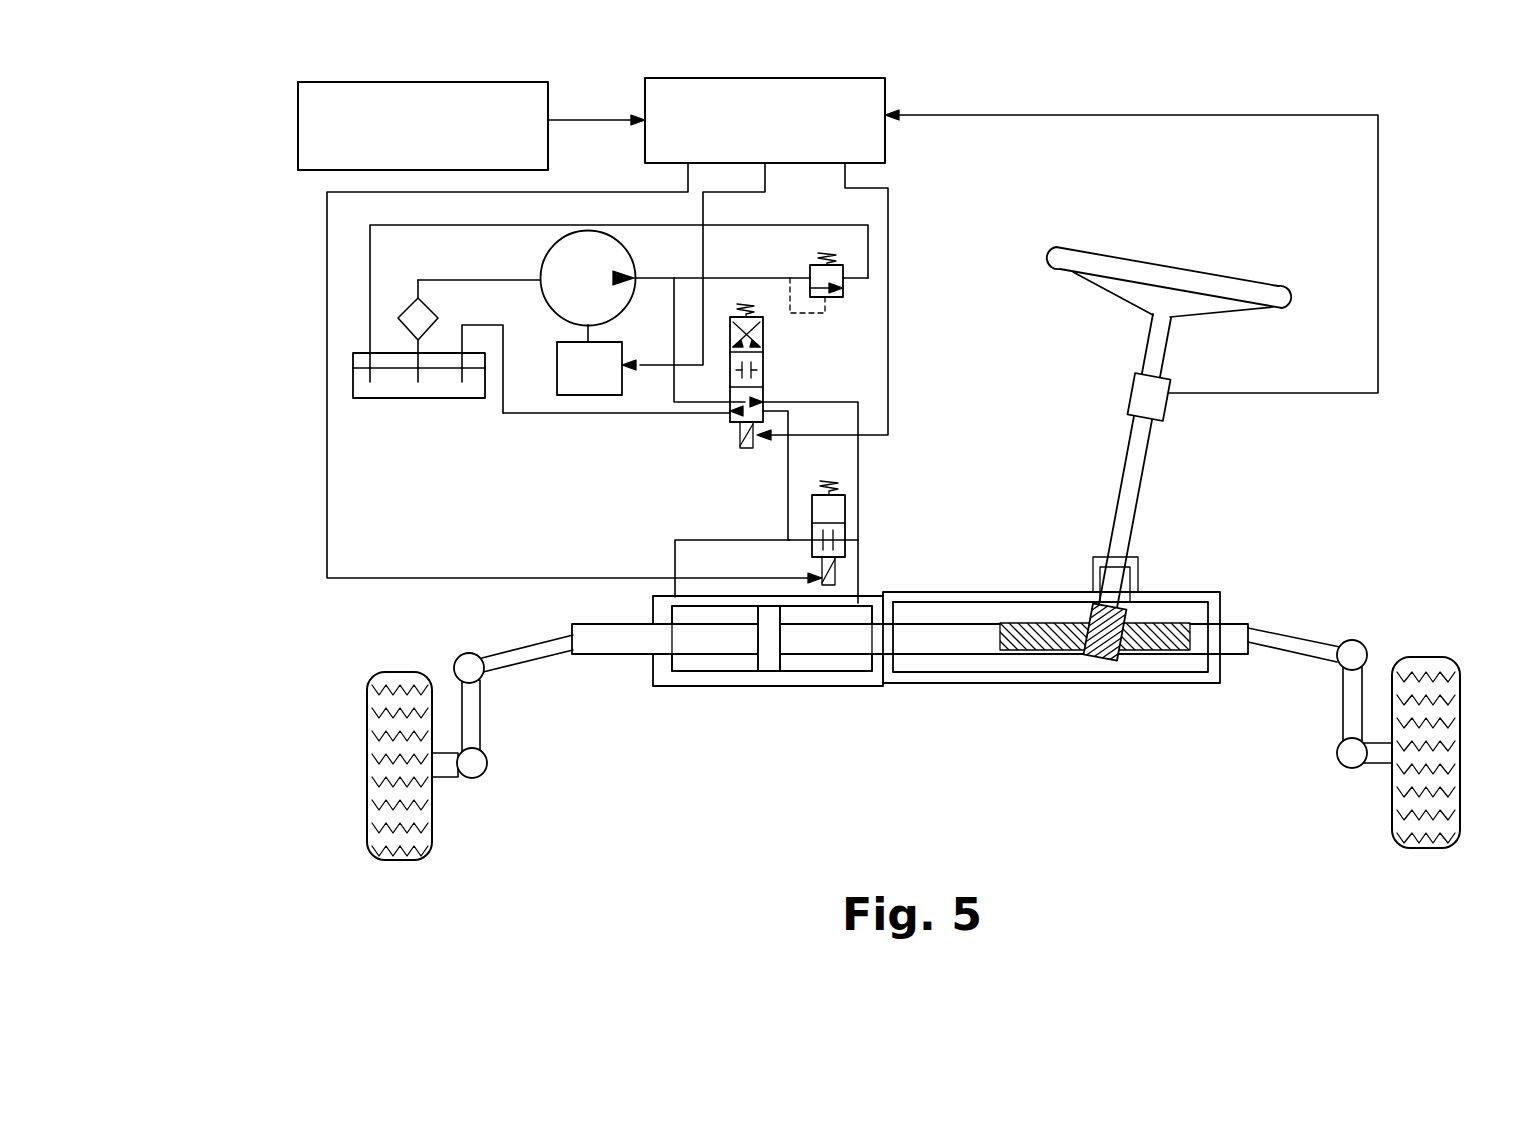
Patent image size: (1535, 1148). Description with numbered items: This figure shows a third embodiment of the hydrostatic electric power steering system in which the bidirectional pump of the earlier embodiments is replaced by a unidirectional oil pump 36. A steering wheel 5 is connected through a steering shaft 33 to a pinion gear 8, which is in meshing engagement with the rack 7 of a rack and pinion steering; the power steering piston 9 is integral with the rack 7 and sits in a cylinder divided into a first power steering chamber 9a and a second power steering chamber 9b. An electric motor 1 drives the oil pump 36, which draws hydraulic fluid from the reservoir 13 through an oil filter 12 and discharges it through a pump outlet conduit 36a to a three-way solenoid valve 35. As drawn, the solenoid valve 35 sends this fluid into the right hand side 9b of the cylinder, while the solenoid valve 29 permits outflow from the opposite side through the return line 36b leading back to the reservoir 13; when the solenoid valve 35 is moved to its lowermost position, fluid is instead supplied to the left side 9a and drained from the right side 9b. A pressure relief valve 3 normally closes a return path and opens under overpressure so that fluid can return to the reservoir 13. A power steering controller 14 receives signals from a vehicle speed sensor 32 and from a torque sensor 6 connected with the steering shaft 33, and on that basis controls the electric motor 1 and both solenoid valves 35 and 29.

The vehicle speed sensor 32 is at (423, 126).
The power steering controller 14 is at (963, 235).
The oil filter 12 is at (418, 298).
The reservoir 13 is at (358, 388).
The unidirectional oil pump 36 is at (560, 298).
The pump outlet conduit 36a is at (674, 308).
The return line 36b is at (612, 413).
The electric motor 1 is at (577, 390).
The solenoid valve 29 is at (812, 510).
The pressure relief valve 3 is at (843, 292).
The three-way solenoid valve 35 is at (758, 373).
The steering wheel 5 is at (1207, 265).
The torque sensor 6 is at (1301, 403).
The steering shaft 33 is at (1130, 528).
The power steering piston 9 is at (910, 702).
The first power steering chamber 9a is at (690, 668).
The second power steering chamber 9b is at (853, 668).
The pinion gear 8 is at (1105, 662).
The rack 7 is at (1175, 640).